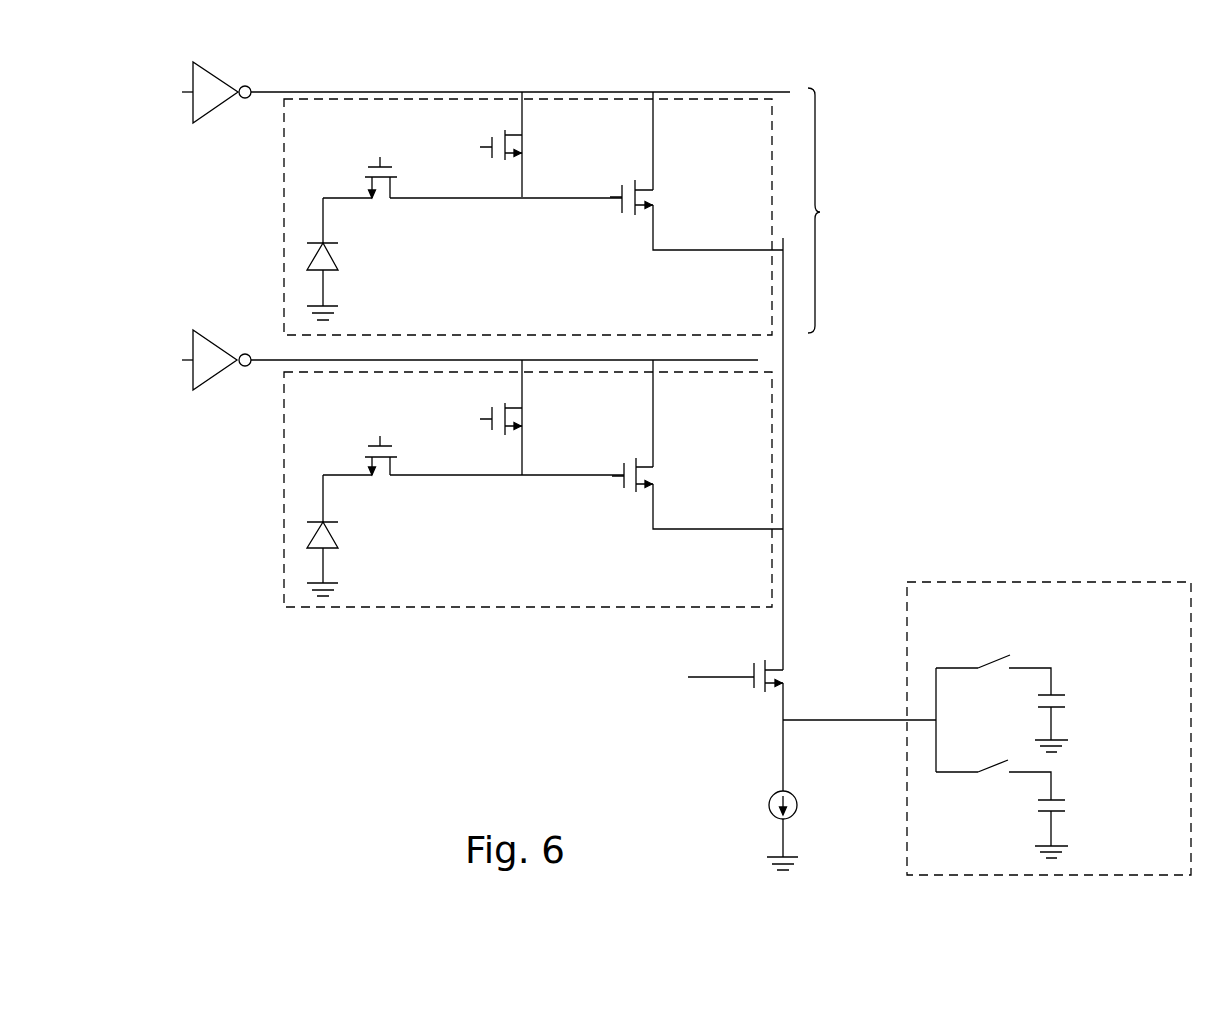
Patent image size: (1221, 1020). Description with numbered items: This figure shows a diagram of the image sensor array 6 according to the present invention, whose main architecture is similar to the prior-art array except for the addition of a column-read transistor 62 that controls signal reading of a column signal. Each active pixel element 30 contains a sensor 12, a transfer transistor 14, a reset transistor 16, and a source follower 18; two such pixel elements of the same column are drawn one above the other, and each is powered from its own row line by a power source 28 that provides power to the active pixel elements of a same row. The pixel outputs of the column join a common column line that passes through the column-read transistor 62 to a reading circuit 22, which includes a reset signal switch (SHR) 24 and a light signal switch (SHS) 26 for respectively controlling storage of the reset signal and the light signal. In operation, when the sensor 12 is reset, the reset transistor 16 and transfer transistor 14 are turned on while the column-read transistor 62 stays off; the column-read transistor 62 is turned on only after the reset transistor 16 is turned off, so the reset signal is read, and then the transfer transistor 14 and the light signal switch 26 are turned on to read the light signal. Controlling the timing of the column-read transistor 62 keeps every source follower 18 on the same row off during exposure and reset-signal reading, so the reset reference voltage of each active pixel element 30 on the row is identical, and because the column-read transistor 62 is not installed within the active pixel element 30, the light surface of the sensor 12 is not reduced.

The image sensor array 6 is at (1120, 145).
The sensor 12 is at (310, 256).
The transfer transistor 14 is at (364, 177).
The reset transistor 16 is at (480, 148).
The source follower 18 is at (622, 207).
The reading circuit 22 is at (1113, 580).
The reset signal switch (SHR) 24 is at (1018, 656).
The light signal switch (SHS) 26 is at (996, 775).
The power source 28 is at (191, 63).
The active pixel element 30 is at (568, 211).
The column-read transistor 62 is at (754, 688).